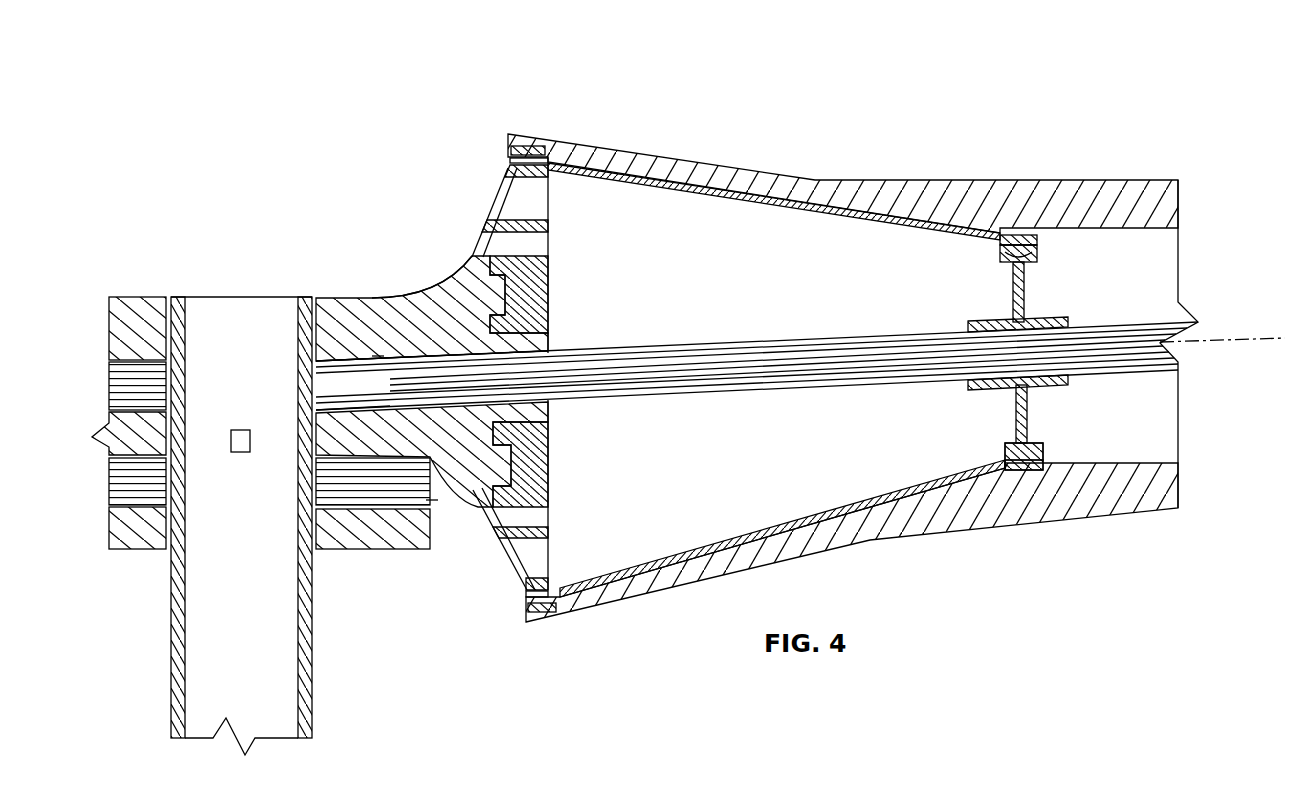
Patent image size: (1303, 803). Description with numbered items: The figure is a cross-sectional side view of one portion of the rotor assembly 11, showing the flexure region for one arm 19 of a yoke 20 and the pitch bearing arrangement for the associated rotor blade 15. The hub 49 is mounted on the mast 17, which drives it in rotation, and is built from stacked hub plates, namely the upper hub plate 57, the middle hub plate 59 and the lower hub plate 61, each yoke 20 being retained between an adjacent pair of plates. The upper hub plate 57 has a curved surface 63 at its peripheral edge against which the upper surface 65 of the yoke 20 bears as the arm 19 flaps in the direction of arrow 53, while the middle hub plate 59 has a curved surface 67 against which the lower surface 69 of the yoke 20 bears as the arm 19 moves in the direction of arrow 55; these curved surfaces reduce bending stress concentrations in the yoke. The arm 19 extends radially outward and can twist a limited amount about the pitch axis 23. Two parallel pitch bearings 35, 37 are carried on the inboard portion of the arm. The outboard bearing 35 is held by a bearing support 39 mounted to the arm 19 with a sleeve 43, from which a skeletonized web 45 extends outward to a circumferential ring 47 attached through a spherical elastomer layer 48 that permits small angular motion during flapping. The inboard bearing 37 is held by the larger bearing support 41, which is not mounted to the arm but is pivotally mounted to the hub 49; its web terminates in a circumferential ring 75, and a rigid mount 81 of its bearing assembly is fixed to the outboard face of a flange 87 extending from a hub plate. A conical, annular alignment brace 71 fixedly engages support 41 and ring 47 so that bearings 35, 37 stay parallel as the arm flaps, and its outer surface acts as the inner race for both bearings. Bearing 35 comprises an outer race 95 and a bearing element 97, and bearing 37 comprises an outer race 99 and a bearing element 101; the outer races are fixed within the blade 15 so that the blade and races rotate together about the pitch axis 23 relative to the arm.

The rotor assembly 11 is at (289, 165).
The rotor blade 15 is at (993, 210).
The mast 17 is at (313, 664).
The arm 19 is at (777, 336).
The yoke 20 is at (377, 350).
The pitch axis 23 is at (1250, 340).
The pitch bearing 35 is at (1054, 463).
The pitch bearing 37 is at (520, 616).
The bearing support 39 is at (1006, 418).
The bearing support 41 is at (554, 227).
The sleeve 43 is at (1056, 320).
The skeletonized web 45 is at (1012, 282).
The circumferential ring 47 is at (1000, 249).
The spherical elastomer layer 48 is at (1032, 260).
The hub 49 is at (146, 292).
The arrow 53 is at (1152, 160).
The arrow 55 is at (1168, 515).
The upper hub plate 57 is at (410, 320).
The middle hub plate 59 is at (348, 413).
The lower hub plate 61 is at (348, 549).
The curved surface 63 is at (500, 352).
The upper surface 65 is at (478, 350).
The curved surface 67 is at (549, 415).
The lower surface 69 is at (470, 462).
The alignment brace 71 is at (805, 518).
The circumferential ring 75 is at (522, 178).
The rigid mount 81 is at (549, 290).
The flange 87 is at (472, 272).
The outer race 95 is at (1020, 238).
The bearing element 97 is at (1037, 242).
The outer race 99 is at (520, 150).
The bearing element 101 is at (520, 160).